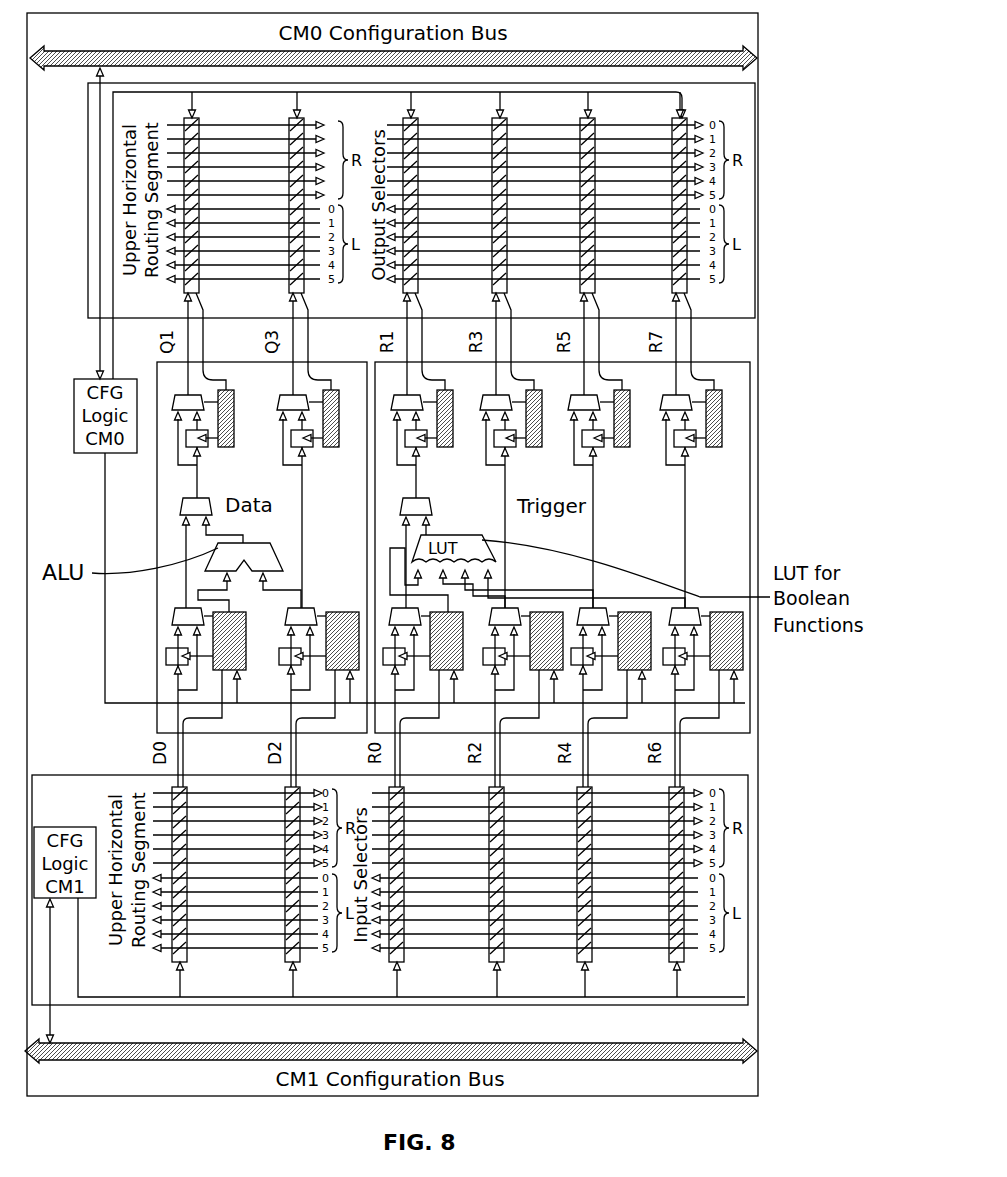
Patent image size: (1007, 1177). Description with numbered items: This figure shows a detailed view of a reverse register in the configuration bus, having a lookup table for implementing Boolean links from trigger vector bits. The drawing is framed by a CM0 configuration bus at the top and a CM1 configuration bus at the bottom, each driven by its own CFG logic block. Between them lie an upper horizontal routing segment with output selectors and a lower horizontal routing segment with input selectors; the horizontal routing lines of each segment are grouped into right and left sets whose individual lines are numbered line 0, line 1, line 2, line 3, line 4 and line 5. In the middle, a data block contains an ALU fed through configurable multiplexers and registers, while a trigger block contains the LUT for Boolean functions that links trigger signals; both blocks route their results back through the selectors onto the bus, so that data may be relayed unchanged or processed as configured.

The routing line 0 is at (251, 125).
The routing line 1 is at (251, 139).
The routing line 2 is at (251, 153).
The routing line 3 is at (251, 167).
The routing line 4 is at (251, 181).
The routing line 5 is at (251, 195).